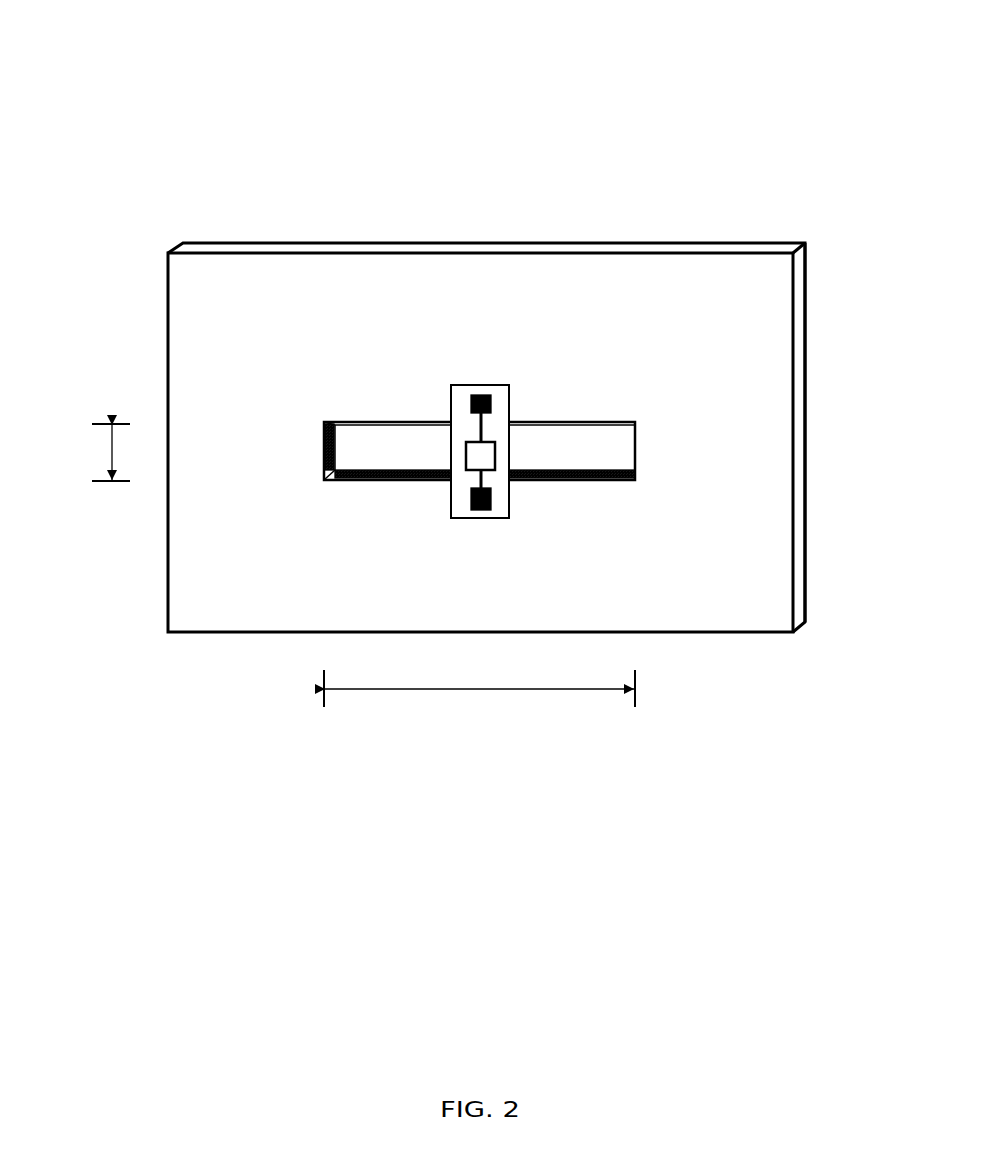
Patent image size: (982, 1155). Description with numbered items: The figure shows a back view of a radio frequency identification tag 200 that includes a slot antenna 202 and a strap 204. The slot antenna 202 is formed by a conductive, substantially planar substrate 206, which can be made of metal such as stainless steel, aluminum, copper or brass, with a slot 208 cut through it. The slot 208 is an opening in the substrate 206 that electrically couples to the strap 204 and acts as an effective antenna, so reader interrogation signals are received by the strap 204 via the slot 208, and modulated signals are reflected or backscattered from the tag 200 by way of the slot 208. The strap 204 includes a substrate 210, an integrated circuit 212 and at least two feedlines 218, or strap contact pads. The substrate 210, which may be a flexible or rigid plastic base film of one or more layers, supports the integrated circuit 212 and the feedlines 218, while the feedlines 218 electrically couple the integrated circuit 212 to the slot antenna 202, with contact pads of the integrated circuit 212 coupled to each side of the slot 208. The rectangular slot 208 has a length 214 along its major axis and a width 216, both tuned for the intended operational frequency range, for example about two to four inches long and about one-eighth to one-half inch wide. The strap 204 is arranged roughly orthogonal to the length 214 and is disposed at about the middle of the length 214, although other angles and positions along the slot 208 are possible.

The RFID tag 200 is at (210, 82).
The slot antenna 202 is at (810, 385).
The strap 204 is at (448, 388).
The substrate 206 is at (806, 289).
The slot 208 is at (637, 437).
The substrate 210 is at (500, 518).
The integrated circuit 212 is at (497, 472).
The length 214 is at (481, 689).
The width 216 is at (112, 452).
The feedlines 218 is at (490, 395).